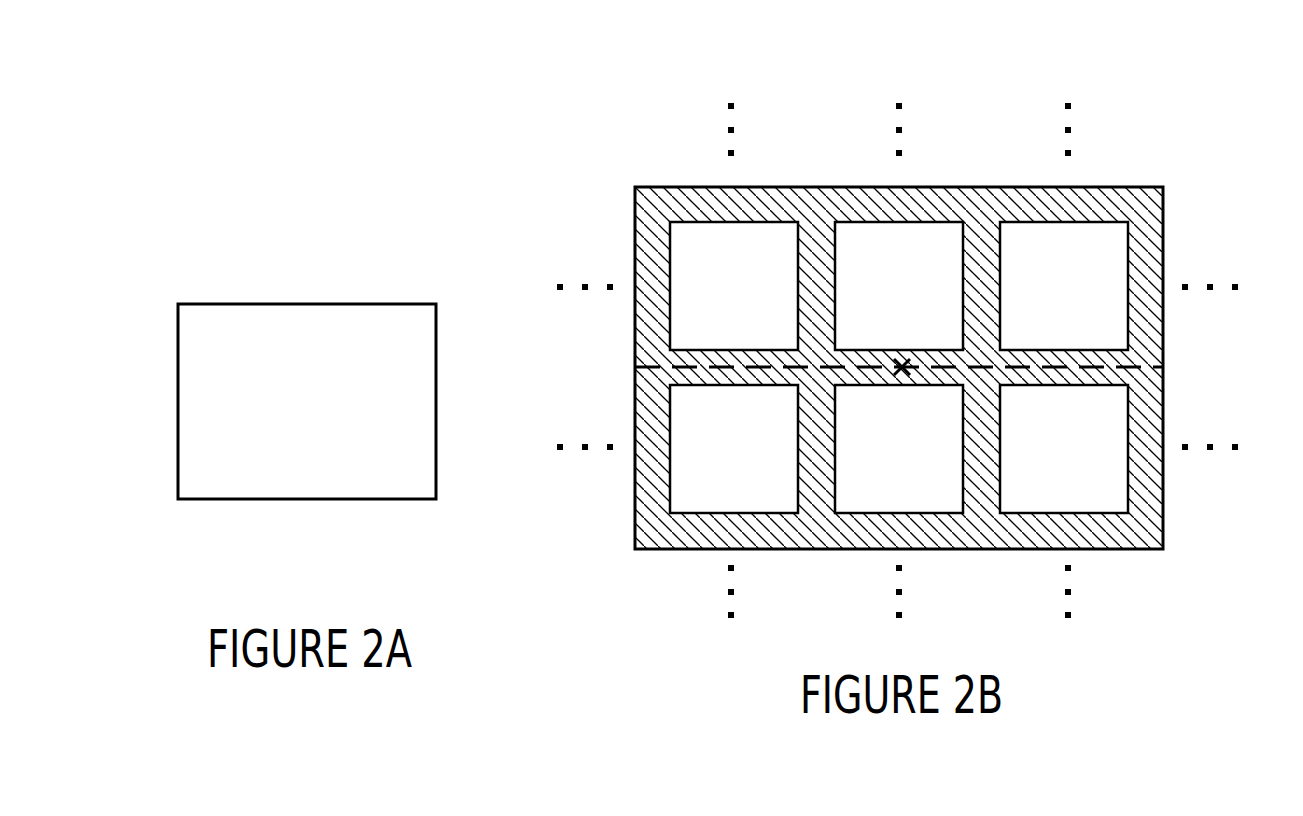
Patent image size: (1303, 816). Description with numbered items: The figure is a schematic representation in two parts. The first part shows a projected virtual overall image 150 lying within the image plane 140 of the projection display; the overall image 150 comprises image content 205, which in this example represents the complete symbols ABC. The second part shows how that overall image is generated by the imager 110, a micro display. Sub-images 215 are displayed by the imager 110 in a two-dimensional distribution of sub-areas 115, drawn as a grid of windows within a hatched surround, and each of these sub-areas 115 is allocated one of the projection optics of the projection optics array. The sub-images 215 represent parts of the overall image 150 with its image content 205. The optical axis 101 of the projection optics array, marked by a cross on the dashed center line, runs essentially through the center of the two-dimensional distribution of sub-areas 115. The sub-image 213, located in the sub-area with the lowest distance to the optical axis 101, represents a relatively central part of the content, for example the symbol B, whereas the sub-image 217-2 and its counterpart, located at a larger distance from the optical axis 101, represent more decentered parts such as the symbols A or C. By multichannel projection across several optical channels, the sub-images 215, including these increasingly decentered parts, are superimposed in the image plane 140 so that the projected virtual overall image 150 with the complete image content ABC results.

In FIG. 2B, the imager 110 is at (916, 331).
In FIG. 2B, the sub-areas 115 is at (1070, 180).
In FIG. 2B, the sub-image 217-2 is at (1108, 261).
In FIG. 2B, the sub-image 213 is at (867, 290).
In FIG. 2B, the sub-images 215 is at (904, 258).
In FIG. 2B, the optical axis 101 is at (901, 383).
In FIG. 2A, the projected virtual overall image 150 is at (312, 303).
In FIG. 2A, the image content 205 is at (203, 390).
In FIG. 2A, the image plane 140 is at (261, 394).